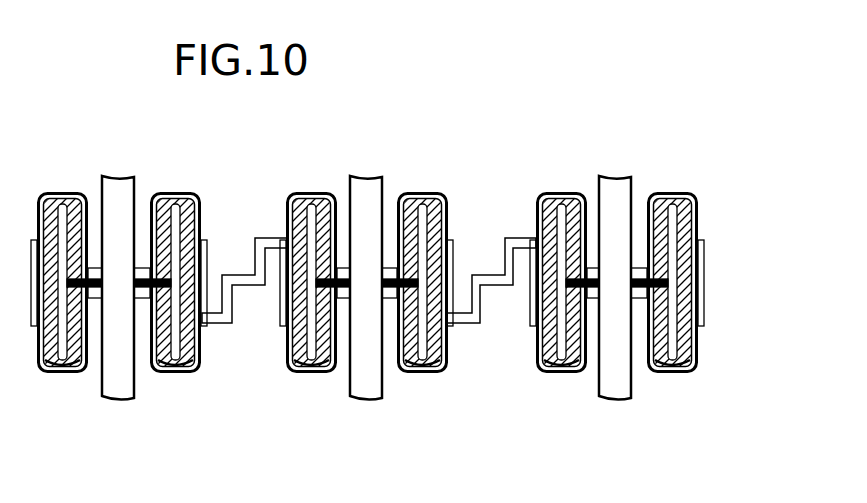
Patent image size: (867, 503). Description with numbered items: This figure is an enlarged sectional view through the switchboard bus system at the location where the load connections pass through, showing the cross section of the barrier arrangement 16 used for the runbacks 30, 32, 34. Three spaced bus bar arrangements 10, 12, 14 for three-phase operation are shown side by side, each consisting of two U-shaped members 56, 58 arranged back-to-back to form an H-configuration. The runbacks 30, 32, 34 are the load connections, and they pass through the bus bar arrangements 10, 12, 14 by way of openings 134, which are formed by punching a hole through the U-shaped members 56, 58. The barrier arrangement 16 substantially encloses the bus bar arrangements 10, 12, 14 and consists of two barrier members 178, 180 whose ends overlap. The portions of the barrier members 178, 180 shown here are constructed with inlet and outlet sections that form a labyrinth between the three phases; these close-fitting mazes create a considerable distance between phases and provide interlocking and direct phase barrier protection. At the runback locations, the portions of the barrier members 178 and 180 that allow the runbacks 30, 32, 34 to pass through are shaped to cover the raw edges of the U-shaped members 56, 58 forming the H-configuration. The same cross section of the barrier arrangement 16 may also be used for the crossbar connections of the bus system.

The bus bar arrangement 10 is at (567, 160).
The bus bar arrangement 12 is at (314, 162).
The bus bar arrangement 14 is at (58, 162).
The barrier arrangement 16 is at (706, 298).
The runback 30 is at (625, 386).
The runback 32 is at (368, 386).
The runback 34 is at (122, 386).
The U-shaped member 56 is at (432, 200).
The U-shaped member 58 is at (430, 372).
The opening 134 is at (628, 288).
The barrier member 178 is at (693, 205).
The barrier member 180 is at (704, 258).